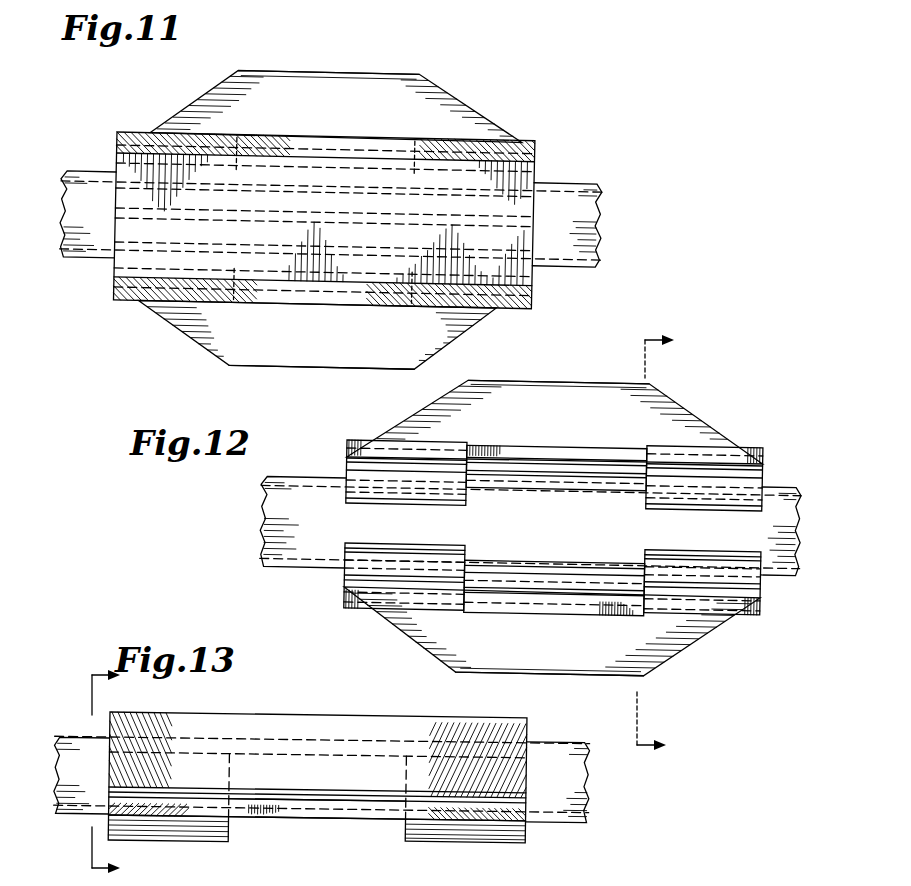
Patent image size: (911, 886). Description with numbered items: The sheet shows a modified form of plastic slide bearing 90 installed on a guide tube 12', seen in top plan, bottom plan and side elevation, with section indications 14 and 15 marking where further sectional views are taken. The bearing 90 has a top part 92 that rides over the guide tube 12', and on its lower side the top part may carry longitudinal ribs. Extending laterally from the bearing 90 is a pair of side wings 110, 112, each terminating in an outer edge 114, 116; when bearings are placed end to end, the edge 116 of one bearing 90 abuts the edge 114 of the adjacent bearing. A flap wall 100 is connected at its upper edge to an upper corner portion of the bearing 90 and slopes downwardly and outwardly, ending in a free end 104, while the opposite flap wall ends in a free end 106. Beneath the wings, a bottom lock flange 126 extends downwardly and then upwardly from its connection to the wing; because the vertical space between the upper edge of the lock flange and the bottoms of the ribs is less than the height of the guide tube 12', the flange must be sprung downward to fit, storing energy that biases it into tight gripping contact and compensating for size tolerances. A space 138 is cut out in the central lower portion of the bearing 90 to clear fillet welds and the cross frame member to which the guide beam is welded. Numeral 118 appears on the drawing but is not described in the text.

In FIG. 11, the plastic slide bearing 90 is at (330, 212).
In FIG. 12, the plastic slide bearing 90 is at (499, 522).
In FIG. 13, the plastic slide bearing 90 is at (316, 778).
In FIG. 11, the top part 92 is at (447, 167).
In FIG. 13, the top part 92 is at (353, 717).
In FIG. 11, the guide tube 12' is at (567, 241).
In FIG. 12, the guide tube 12' is at (229, 584).
In FIG. 11, the side wing 110 is at (272, 87).
In FIG. 12, the side wing 110 is at (584, 655).
In FIG. 13, the side wing 110 is at (386, 831).
In FIG. 11, the side wing 112 is at (280, 352).
In FIG. 12, the side wing 112 is at (518, 395).
In FIG. 11, the outer edge 114 is at (368, 73).
In FIG. 12, the outer edge 114 is at (512, 672).
In FIG. 13, the outer edge 114 is at (252, 812).
In FIG. 11, the outer edge 116 is at (352, 365).
In FIG. 12, the outer edge 116 is at (586, 385).
In FIG. 13, the flap wall 100 is at (273, 762).
In FIG. 13, the free end 104 is at (110, 768).
In FIG. 13, the free end 106 is at (552, 790).
In FIG. 13, the bottom lock flange 126 is at (160, 827).
In FIG. 13, the space 138 is at (243, 848).
In FIG. 13, the seal 118 is at (199, 882).
In FIG. 13, the section line 14 is at (125, 776).
In FIG. 12, the section line 15 is at (676, 548).